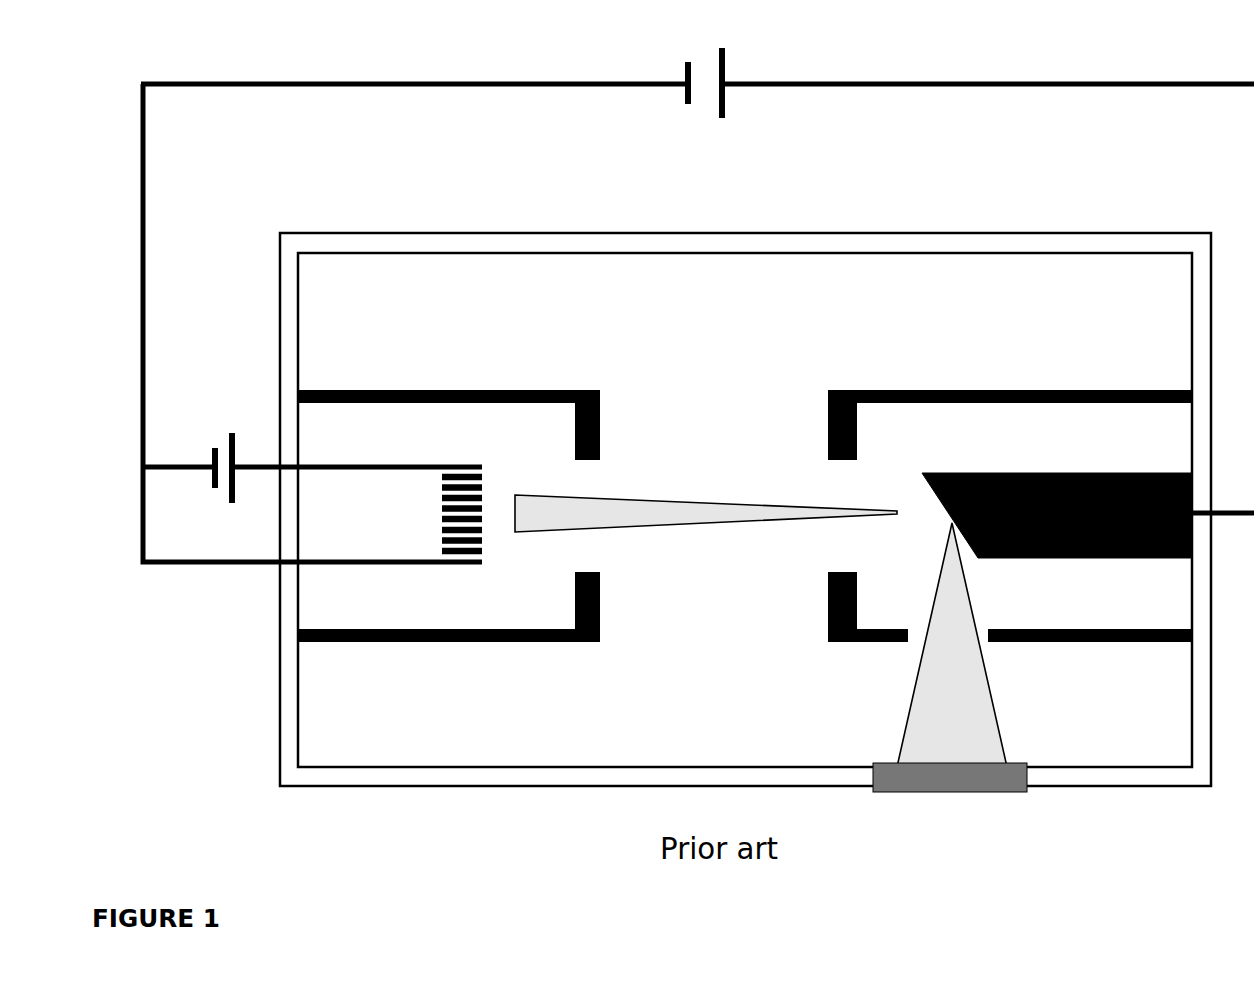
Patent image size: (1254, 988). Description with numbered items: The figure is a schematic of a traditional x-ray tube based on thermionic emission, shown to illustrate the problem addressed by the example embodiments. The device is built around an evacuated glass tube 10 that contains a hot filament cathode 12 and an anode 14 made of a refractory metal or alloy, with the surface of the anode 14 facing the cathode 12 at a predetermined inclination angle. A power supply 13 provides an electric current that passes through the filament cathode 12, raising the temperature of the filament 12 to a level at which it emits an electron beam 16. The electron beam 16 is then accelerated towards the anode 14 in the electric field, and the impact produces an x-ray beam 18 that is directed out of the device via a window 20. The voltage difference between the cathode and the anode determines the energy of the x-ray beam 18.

The evacuated glass tube 10 is at (360, 789).
The hot filament cathode 12 is at (388, 567).
The power supply 13 is at (727, 60).
The anode 14 is at (1028, 473).
The electron beam 16 is at (686, 523).
The x-ray beam 18 is at (992, 690).
The window 20 is at (1000, 795).